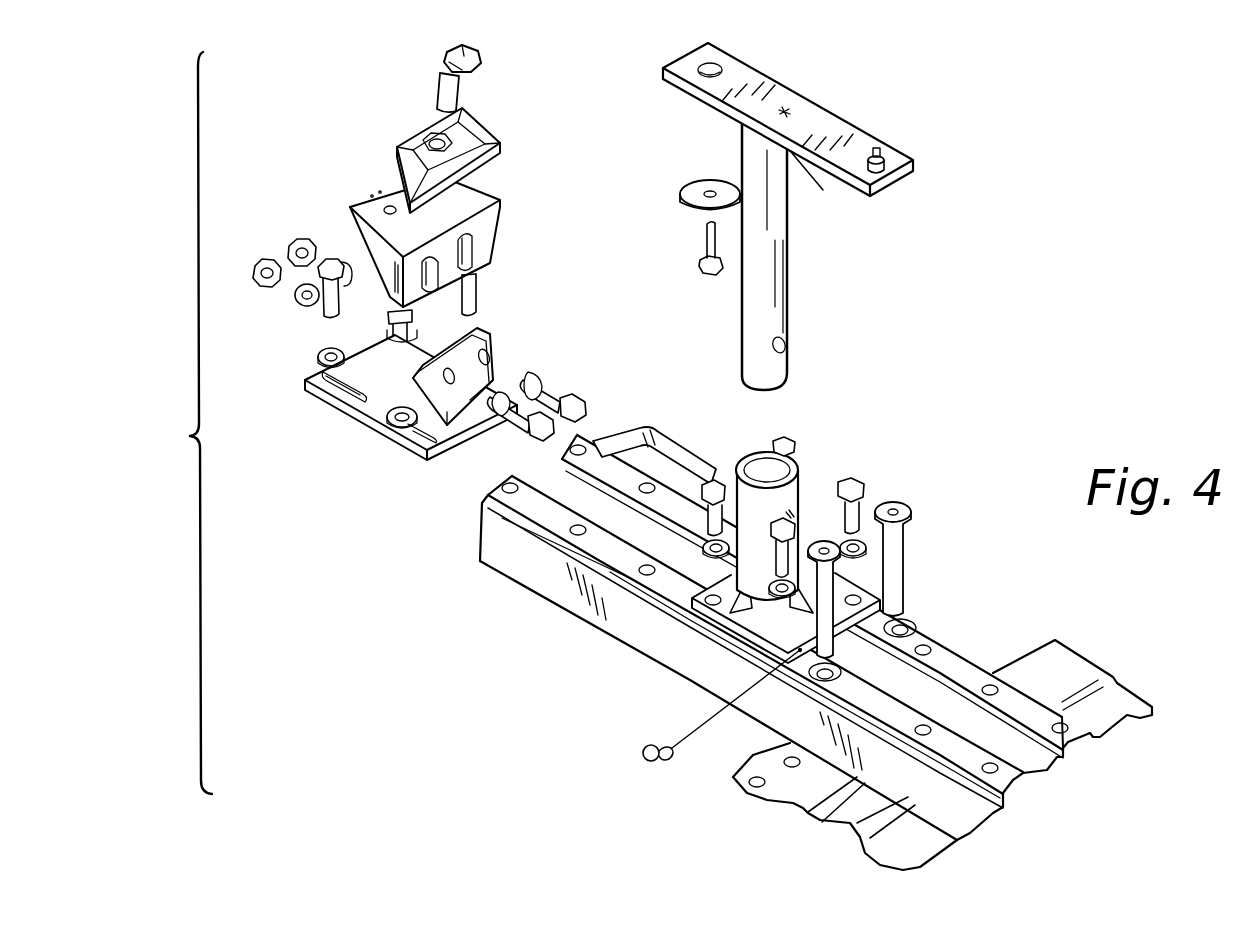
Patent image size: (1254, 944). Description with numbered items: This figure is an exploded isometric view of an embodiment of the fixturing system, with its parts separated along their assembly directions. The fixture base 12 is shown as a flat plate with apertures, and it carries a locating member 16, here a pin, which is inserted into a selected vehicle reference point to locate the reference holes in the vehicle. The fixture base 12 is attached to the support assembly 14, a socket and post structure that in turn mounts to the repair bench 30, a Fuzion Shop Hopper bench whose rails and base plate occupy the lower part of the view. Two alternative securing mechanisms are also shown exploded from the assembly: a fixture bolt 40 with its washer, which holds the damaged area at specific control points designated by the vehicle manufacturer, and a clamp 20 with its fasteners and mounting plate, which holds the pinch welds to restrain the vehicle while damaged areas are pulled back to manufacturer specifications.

The fixture base 12 is at (826, 116).
The support assembly 14 is at (792, 487).
The locating member 16 is at (881, 143).
The clamp 20 is at (357, 126).
The repair bench 30 is at (538, 576).
The fixture bolt 40 is at (672, 264).